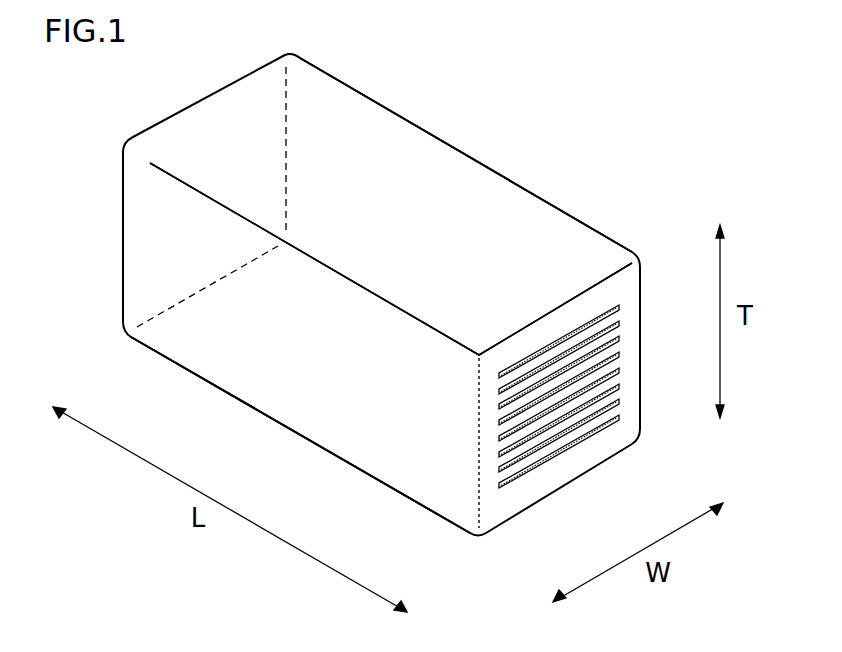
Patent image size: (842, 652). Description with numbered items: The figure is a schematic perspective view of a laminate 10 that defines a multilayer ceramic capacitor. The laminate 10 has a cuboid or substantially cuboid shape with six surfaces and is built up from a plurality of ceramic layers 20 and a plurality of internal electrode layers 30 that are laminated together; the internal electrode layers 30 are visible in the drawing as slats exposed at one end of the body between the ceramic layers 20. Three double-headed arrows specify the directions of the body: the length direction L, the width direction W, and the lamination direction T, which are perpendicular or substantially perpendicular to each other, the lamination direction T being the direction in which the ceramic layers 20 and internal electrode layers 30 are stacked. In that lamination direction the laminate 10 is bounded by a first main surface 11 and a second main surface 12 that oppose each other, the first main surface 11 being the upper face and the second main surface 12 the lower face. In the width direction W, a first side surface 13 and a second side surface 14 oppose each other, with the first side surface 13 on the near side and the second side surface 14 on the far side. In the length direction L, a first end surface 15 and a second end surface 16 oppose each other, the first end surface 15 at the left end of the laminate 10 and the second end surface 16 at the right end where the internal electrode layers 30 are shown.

The laminate 10 is at (630, 155).
The first main surface 11 is at (397, 148).
The second main surface 12 is at (390, 440).
The first side surface 13 is at (218, 357).
The second side surface 14 is at (493, 215).
The first end surface 15 is at (143, 197).
The second end surface 16 is at (630, 330).
The ceramic layers 20 is at (528, 448).
The internal electrode layers 30 is at (563, 437).